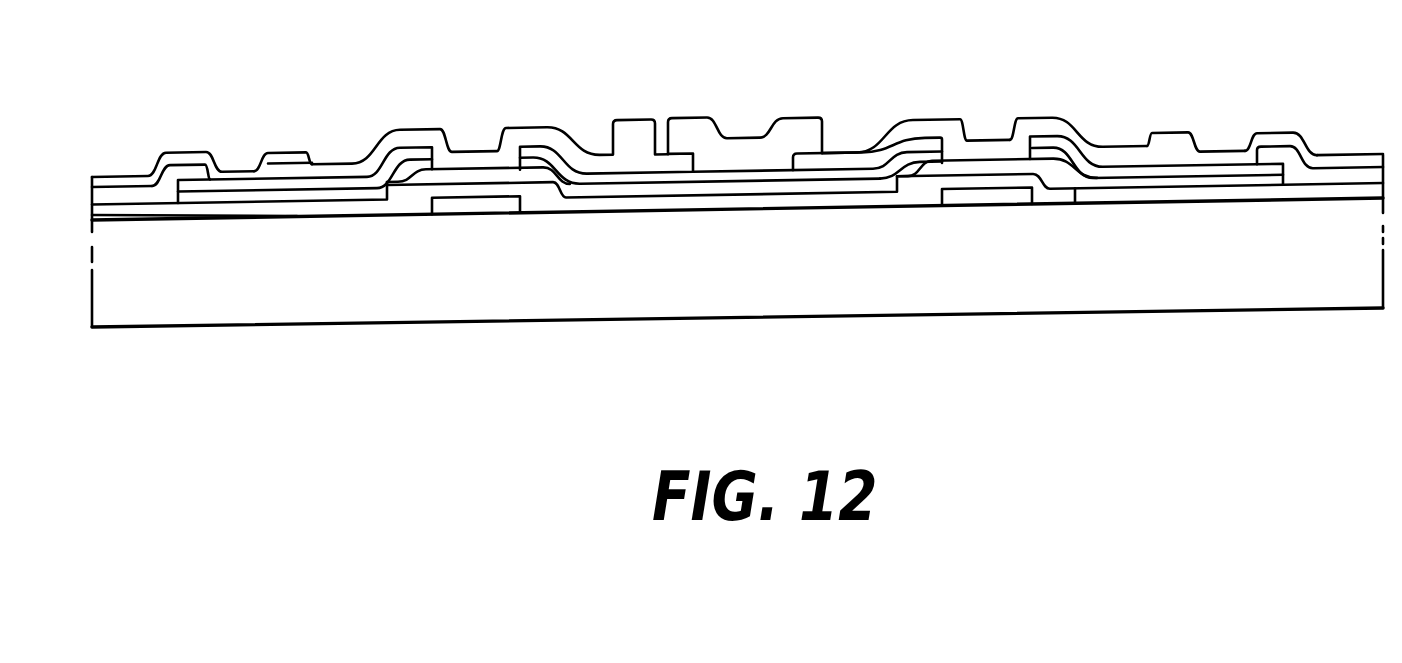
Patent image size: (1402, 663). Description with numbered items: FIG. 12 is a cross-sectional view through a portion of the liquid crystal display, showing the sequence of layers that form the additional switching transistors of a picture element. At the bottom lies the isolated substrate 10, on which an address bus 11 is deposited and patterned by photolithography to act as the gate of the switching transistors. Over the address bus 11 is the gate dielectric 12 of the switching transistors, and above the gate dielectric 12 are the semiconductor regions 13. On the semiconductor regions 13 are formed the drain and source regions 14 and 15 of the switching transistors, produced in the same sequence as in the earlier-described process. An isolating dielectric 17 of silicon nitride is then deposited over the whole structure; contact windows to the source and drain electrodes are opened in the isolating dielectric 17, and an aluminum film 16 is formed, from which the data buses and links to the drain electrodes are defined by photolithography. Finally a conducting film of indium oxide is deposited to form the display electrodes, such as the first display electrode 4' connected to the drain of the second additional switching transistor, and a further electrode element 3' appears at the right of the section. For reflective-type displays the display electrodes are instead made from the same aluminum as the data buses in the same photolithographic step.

The isolated substrate 10 is at (267, 268).
The address bus 11 is at (450, 205).
The gate dielectric 12 is at (527, 213).
The semiconductor regions 13 is at (910, 183).
The drain region 14 is at (707, 193).
The source region 15 is at (763, 178).
The aluminum film 16 is at (800, 118).
The isolating dielectric 17 is at (1048, 125).
The conductive projection 3' is at (1314, 107).
The first display electrode 4' is at (283, 114).